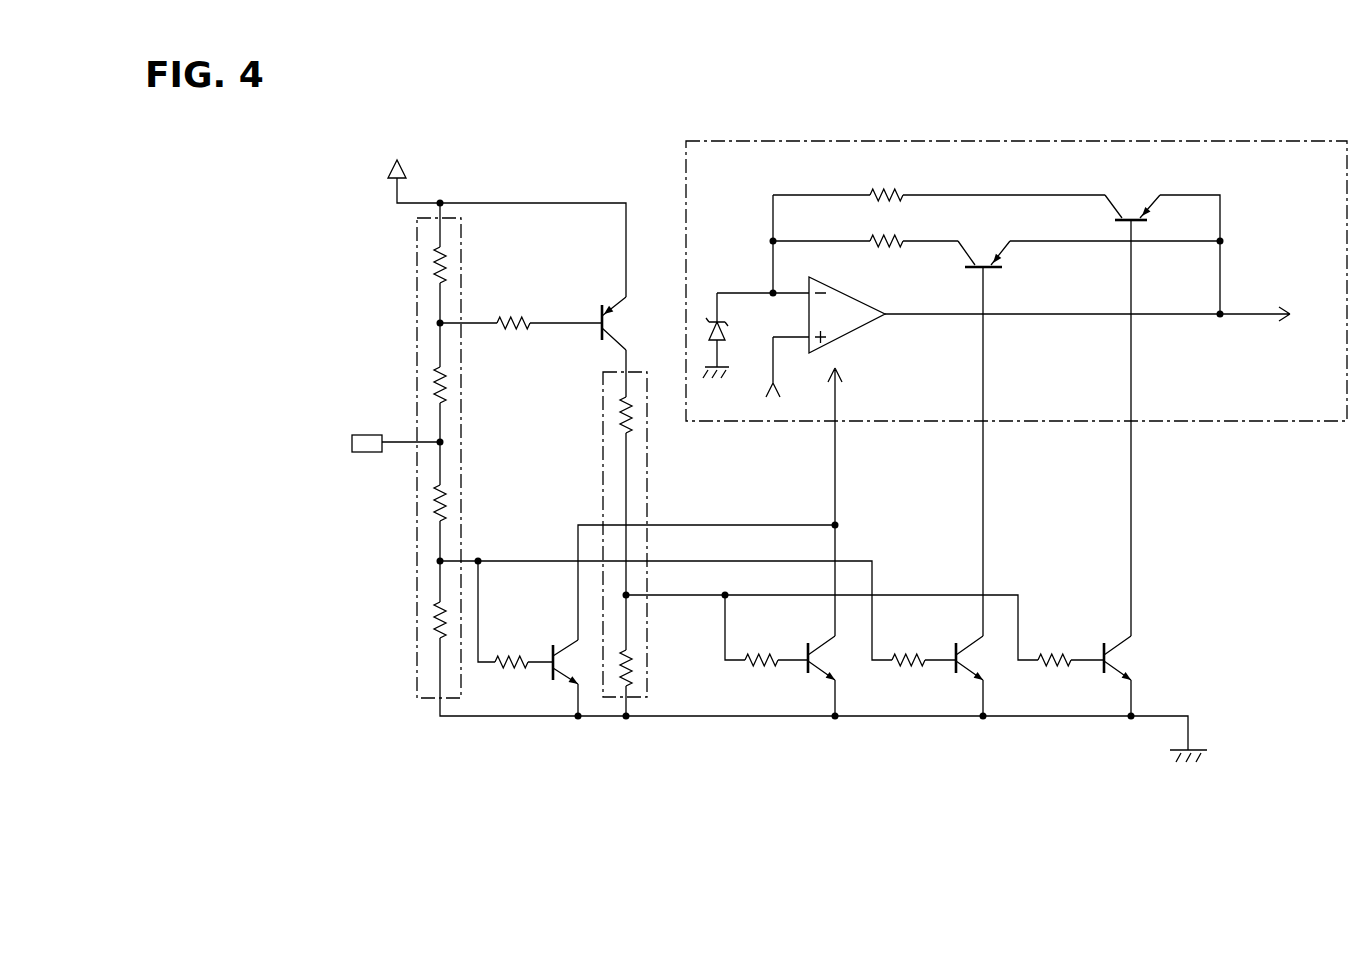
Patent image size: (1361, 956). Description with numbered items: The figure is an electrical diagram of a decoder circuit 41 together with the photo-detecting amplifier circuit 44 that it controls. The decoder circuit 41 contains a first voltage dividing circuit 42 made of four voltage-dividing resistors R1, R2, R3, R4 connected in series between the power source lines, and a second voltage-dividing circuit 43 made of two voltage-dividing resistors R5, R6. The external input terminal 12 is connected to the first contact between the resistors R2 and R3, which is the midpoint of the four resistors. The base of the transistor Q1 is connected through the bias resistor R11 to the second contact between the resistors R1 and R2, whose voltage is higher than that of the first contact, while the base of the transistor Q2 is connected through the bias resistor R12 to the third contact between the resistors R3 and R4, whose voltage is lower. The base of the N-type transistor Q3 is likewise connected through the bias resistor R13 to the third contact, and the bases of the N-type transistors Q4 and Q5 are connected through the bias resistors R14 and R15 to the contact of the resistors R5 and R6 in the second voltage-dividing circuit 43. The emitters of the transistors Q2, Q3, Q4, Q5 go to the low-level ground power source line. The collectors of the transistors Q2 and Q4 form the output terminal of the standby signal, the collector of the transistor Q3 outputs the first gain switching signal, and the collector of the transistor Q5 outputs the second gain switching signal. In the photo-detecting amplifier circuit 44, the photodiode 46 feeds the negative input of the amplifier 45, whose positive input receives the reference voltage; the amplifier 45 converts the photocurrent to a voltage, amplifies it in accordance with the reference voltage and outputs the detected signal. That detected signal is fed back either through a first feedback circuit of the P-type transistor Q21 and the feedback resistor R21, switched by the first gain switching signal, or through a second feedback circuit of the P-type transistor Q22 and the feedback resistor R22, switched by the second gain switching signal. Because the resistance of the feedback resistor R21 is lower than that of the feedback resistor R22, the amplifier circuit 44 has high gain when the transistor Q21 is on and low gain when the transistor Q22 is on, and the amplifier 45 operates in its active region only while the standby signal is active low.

The decoder circuit 41 is at (327, 149).
The external input terminal 12 is at (358, 434).
The first voltage dividing circuit 42 is at (419, 700).
The second voltage-dividing circuit 43 is at (648, 680).
The photo-detecting amplifier circuit 44 is at (1262, 138).
The amplifier 45 is at (846, 284).
The photodiode 46 is at (728, 323).
The voltage-dividing resistor R1 is at (432, 262).
The voltage-dividing resistor R2 is at (432, 384).
The voltage-dividing resistor R3 is at (432, 504).
The voltage-dividing resistor R4 is at (432, 620).
The voltage-dividing resistor R5 is at (620, 412).
The voltage-dividing resistor R6 is at (632, 652).
The bias resistor R11 is at (512, 337).
The bias resistor R12 is at (500, 672).
The bias resistor R13 is at (905, 650).
The bias resistor R14 is at (759, 650).
The bias resistor R15 is at (1054, 650).
The feedback resistor R21 is at (892, 252).
The feedback resistor R22 is at (887, 188).
The transistor Q1 is at (600, 312).
The transistor Q2 is at (556, 680).
The N-type transistor Q3 is at (957, 677).
The N-type transistor Q4 is at (809, 677).
The N-type transistor Q5 is at (1105, 677).
The P-type transistor Q21 is at (996, 272).
The P-type transistor Q22 is at (1150, 222).